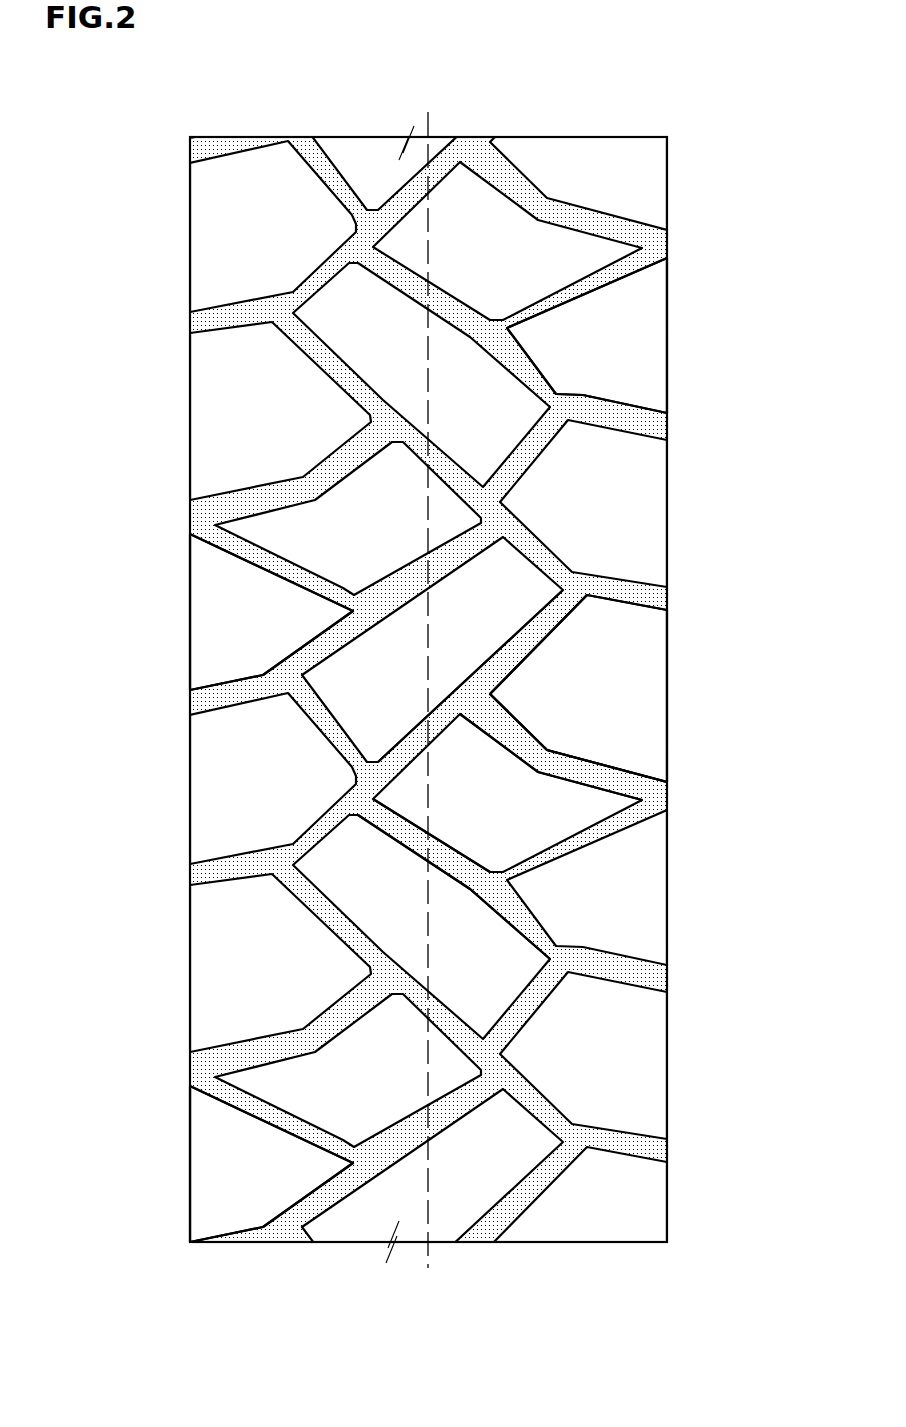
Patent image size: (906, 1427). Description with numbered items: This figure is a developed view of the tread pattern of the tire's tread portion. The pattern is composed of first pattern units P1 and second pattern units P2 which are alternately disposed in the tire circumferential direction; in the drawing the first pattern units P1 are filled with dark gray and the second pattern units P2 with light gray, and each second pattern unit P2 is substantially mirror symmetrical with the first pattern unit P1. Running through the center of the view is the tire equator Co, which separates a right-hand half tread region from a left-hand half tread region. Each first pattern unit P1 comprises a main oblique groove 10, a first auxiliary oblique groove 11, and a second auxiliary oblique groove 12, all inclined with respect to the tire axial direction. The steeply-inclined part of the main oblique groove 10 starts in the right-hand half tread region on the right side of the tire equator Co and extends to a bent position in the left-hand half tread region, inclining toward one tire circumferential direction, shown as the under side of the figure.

The tire equator Co is at (415, 678).
The first pattern unit P1 is at (630, 338).
The second pattern unit P2 is at (228, 601).
The main oblique groove 10 is at (520, 653).
The first auxiliary oblique groove 11 is at (577, 783).
The second auxiliary oblique groove 12 is at (545, 900).